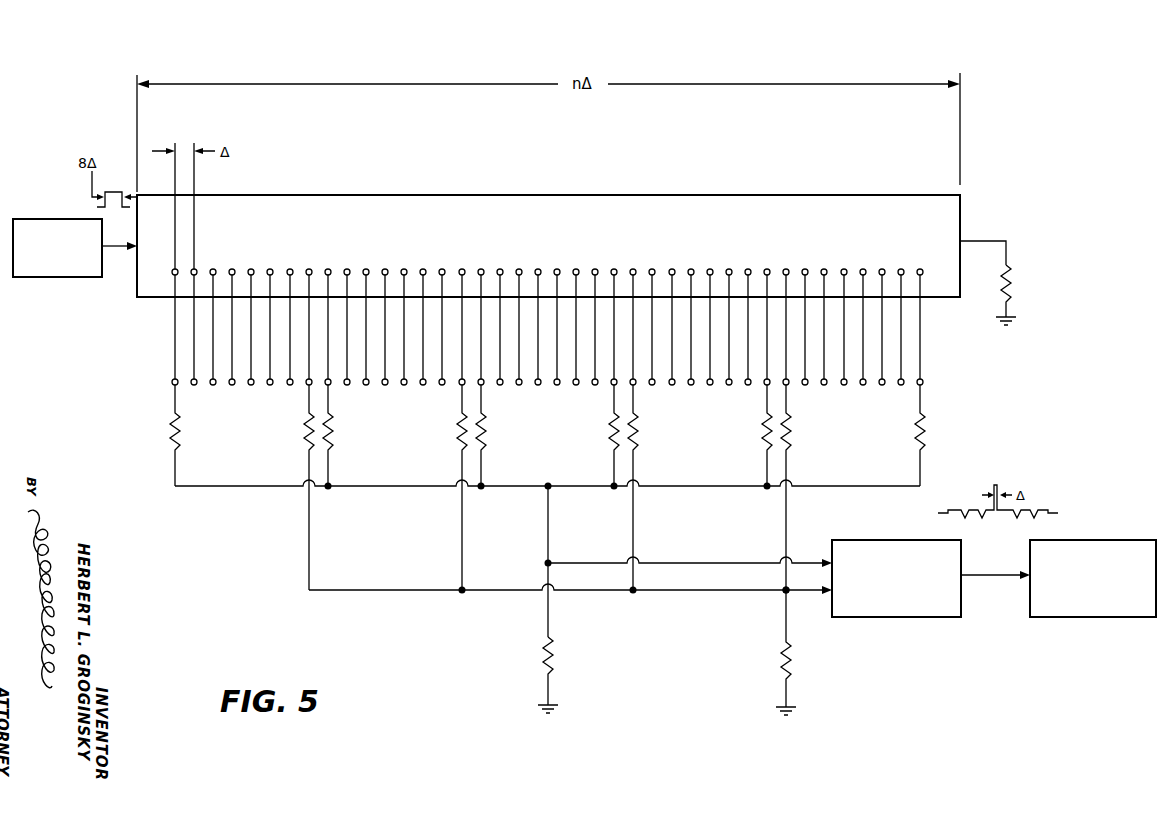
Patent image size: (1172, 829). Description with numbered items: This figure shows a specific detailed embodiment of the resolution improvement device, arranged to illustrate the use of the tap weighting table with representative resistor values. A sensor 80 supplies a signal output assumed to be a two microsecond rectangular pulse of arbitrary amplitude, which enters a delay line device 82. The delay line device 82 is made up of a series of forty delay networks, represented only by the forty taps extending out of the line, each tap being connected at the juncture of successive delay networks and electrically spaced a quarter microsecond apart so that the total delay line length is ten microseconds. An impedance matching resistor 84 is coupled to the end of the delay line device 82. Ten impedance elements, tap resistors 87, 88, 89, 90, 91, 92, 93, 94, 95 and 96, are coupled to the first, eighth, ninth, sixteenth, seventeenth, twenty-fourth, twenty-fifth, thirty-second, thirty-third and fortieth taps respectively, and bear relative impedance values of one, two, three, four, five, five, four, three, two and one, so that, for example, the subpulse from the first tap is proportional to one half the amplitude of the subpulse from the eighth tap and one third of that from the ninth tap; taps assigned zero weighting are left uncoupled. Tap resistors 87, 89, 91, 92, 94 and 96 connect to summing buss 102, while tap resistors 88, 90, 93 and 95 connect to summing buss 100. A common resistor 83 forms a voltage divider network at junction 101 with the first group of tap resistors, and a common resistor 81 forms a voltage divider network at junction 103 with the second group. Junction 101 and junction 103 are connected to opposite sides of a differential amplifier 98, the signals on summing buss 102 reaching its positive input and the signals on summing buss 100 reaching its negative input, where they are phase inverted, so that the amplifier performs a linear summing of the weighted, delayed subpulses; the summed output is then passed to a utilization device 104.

The sensor 80 is at (45, 218).
The delay line device 82 is at (538, 195).
The impedance matching resistor 84 is at (1012, 268).
The tap resistor 87 is at (170, 432).
The tap resistor 88 is at (304, 432).
The tap resistor 89 is at (331, 432).
The tap resistor 90 is at (458, 432).
The tap resistor 91 is at (484, 432).
The tap resistor 92 is at (610, 434).
The tap resistor 93 is at (637, 432).
The tap resistor 94 is at (764, 434).
The tap resistor 95 is at (790, 432).
The tap resistor 96 is at (924, 432).
The differential amplifier 98 is at (894, 540).
The summing buss 100 is at (714, 594).
The junction 101 is at (550, 562).
The summing buss 102 is at (724, 562).
The junction 103 is at (784, 592).
The common resistor 83 is at (543, 652).
The common resistor 81 is at (794, 644).
The utilization device 104 is at (1113, 540).